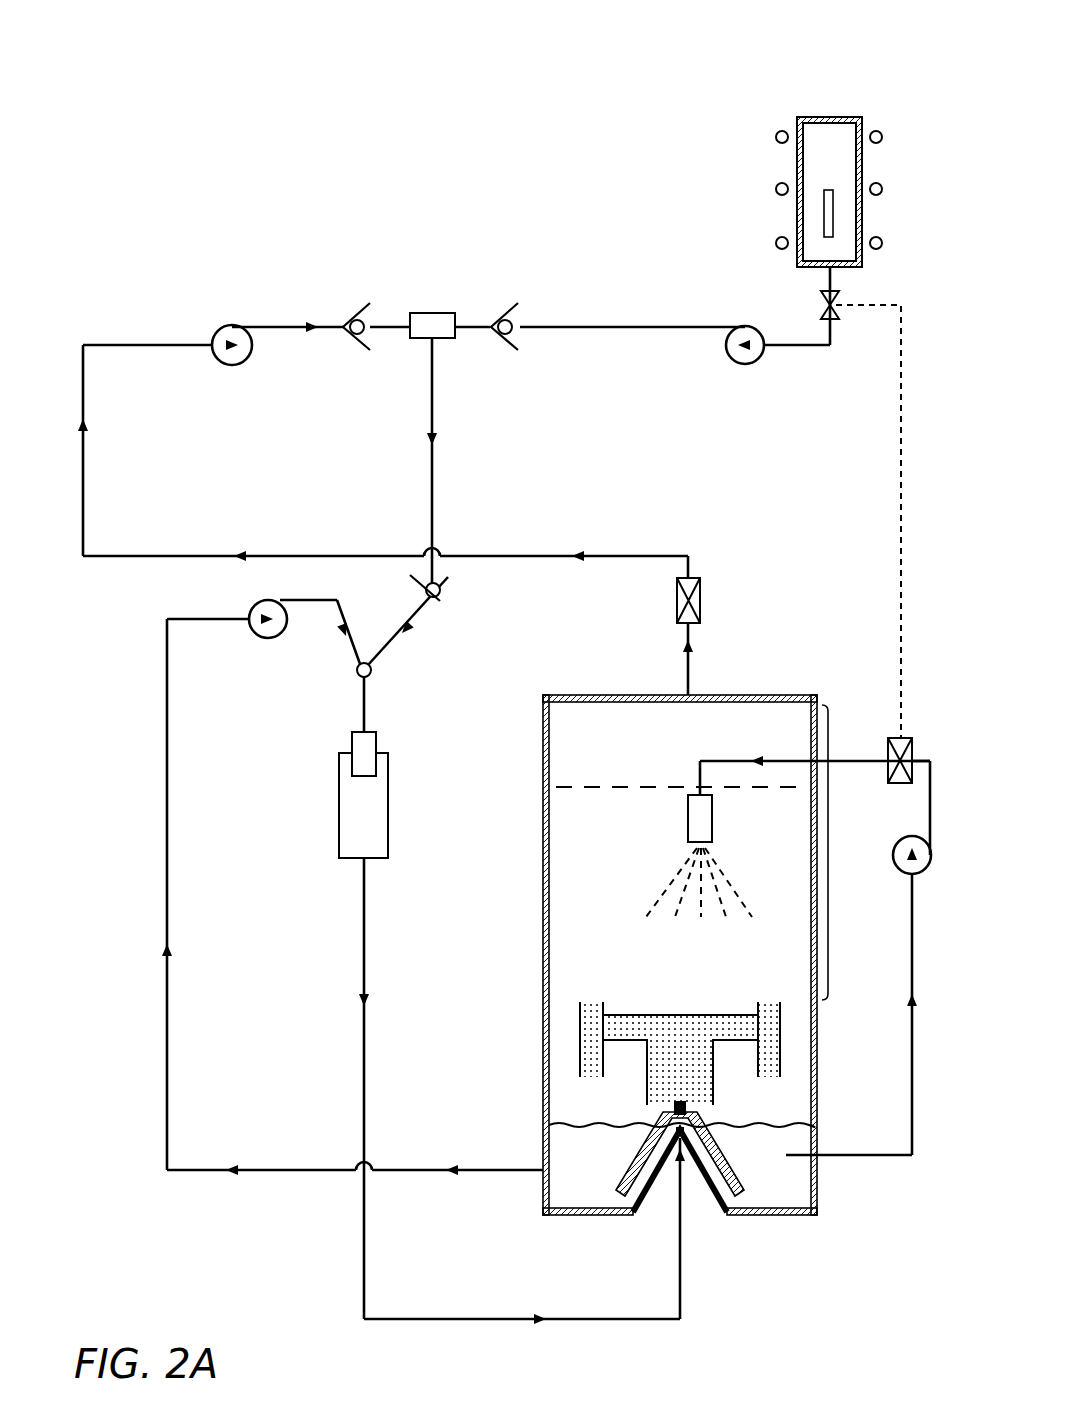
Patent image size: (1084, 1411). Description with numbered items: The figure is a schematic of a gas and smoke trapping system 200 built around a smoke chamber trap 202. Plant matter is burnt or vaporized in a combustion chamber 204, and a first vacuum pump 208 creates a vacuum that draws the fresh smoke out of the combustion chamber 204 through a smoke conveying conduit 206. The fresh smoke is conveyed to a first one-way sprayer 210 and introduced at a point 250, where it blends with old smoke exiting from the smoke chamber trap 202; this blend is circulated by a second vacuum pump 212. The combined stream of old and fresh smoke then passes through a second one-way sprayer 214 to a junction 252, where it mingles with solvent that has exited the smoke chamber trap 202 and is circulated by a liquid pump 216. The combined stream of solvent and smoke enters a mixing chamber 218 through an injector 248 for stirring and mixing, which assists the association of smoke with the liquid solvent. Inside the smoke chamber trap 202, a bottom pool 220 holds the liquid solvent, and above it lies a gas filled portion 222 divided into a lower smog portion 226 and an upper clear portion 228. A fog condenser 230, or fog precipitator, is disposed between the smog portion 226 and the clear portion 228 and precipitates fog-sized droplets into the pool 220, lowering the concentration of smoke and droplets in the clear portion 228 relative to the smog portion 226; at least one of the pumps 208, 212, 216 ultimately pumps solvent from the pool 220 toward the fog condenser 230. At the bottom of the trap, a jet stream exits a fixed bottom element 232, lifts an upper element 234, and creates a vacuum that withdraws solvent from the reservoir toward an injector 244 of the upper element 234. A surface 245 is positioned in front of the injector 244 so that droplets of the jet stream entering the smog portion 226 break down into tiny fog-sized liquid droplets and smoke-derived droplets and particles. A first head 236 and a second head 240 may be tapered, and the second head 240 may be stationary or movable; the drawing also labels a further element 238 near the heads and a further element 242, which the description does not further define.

The gas and smoke trapping system 200 is at (508, 63).
The smoke chamber trap 202 is at (746, 694).
The combustion chamber 204 is at (828, 117).
The smoke conveying conduit 206 is at (618, 325).
The first vacuum pump 208 is at (748, 364).
The first one-way sprayer 210 is at (511, 309).
The second vacuum pump 212 is at (232, 325).
The second one-way sprayer 214 is at (454, 577).
The liquid pump 216 is at (268, 638).
The mixing chamber 218 is at (338, 796).
The bottom pool 220 is at (798, 1177).
The gas filled portion 222 is at (828, 848).
The smog portion 226 is at (610, 868).
The clear portion 228 is at (617, 752).
The fog condenser 230 is at (688, 819).
The fixed bottom element 232 is at (743, 1217).
The upper element 234 is at (733, 1163).
The first head 236 is at (712, 1120).
The heater housing 238 is at (664, 1124).
The second head 240 is at (676, 1110).
The liquid level 242 is at (704, 1092).
The injector 244 is at (674, 1102).
The surface 245 is at (686, 1095).
The injector 248 is at (350, 734).
The point 250 is at (433, 313).
The junction 252 is at (372, 673).